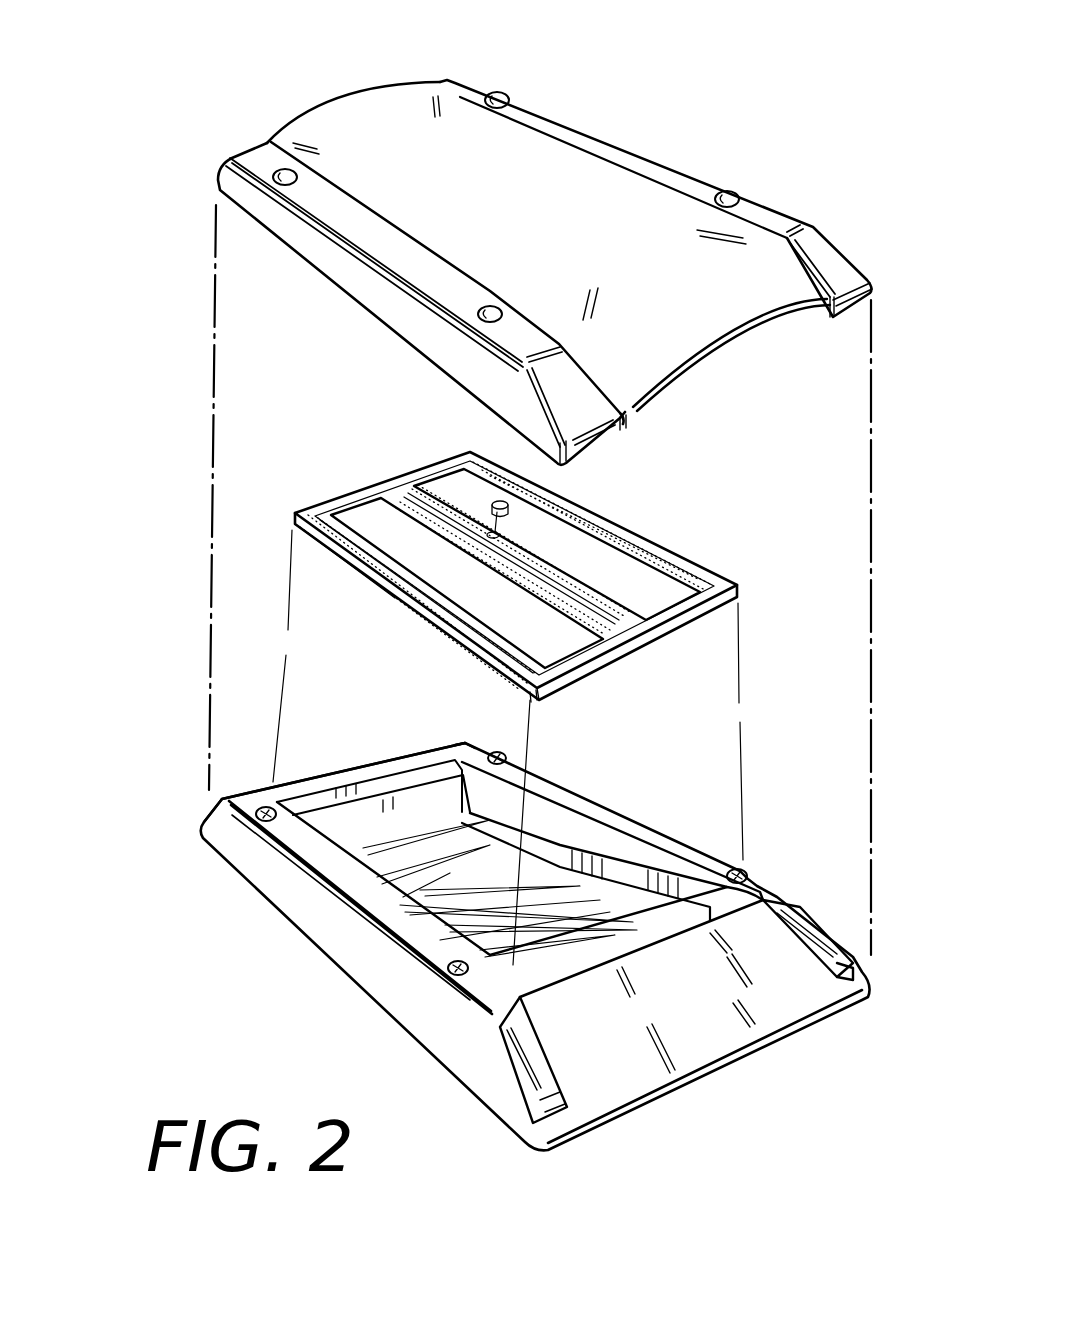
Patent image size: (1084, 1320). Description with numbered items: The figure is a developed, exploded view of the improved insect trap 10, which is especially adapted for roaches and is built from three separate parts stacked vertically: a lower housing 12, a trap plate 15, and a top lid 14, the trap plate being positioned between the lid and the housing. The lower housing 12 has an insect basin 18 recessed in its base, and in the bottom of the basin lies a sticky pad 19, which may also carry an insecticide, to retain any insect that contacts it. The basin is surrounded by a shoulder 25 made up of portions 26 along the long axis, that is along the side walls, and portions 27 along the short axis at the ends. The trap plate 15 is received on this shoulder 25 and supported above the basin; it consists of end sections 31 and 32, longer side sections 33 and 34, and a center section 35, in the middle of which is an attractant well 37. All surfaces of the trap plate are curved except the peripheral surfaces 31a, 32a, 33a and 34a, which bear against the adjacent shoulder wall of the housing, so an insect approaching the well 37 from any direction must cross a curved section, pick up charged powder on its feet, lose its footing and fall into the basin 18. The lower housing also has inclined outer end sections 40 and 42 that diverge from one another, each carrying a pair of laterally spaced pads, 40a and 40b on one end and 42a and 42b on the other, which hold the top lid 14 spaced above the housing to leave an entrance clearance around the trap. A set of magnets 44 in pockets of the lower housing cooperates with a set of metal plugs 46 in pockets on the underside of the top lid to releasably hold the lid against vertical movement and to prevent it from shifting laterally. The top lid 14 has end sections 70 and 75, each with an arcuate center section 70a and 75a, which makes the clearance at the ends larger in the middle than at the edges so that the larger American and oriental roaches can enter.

The insect trap 10 is at (180, 430).
The lower housing 12 is at (320, 947).
The top lid 14 is at (650, 203).
The trap plate 15 is at (707, 570).
The insect basin 18 is at (367, 823).
The sticky pad 19 is at (491, 900).
The shoulder 25 is at (620, 857).
The shoulder portions along the long axis 26 is at (687, 867).
The shoulder portions along the short axis 27 is at (393, 780).
The end section of trap plate 31 is at (400, 473).
The peripheral surface of end section 31a is at (353, 490).
The end section of trap plate 32 is at (637, 633).
The peripheral surface of end section 32a is at (673, 627).
The longer side section of trap plate 33 is at (620, 527).
The peripheral surface of side section 33a is at (667, 547).
The longer side section of trap plate 34 is at (387, 573).
The peripheral surface of side section 34a is at (333, 553).
The center section of trap plate 35 is at (572, 590).
The attractant well 37 is at (487, 533).
The outer end section of lower housing 40 is at (730, 1017).
The pad 40a is at (540, 1060).
The pad 40b is at (827, 937).
The outer end section of lower housing 42 is at (317, 780).
The pad 42a is at (230, 798).
The pad 42b is at (457, 750).
The magnets 44 is at (210, 792).
The metal plugs 46 is at (497, 93).
The end section of top lid 70 is at (727, 328).
The arcuate center section 70a is at (710, 350).
The end section of top lid 75 is at (337, 107).
The arcuate center section 75a is at (365, 92).